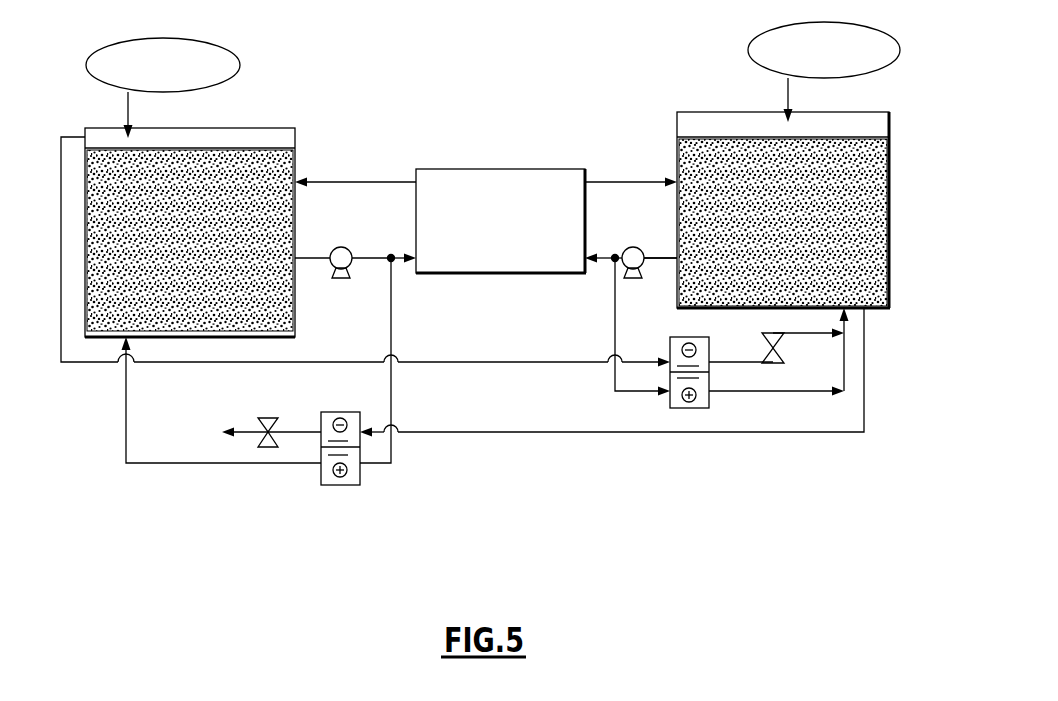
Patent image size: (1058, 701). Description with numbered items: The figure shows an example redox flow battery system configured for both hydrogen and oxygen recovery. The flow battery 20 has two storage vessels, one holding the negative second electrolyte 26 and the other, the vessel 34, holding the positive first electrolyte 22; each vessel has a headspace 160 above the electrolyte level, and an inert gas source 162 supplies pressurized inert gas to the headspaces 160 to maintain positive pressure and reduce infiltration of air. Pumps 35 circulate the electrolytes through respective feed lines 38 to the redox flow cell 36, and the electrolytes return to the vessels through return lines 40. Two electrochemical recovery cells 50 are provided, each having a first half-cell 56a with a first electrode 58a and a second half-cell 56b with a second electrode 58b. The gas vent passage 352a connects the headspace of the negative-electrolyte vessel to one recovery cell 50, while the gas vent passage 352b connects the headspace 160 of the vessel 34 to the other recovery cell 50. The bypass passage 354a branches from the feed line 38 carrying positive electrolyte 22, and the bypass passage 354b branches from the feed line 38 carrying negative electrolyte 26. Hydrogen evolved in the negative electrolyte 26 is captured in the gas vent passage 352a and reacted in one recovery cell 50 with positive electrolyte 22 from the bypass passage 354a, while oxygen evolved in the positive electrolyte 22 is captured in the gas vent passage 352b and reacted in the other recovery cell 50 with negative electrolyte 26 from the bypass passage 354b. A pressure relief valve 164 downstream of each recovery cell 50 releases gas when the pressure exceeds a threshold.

The flow battery 20 is at (446, 301).
The first electrolyte 22 is at (872, 272).
The second electrolyte 26 is at (211, 320).
The second vessel 34 is at (891, 196).
The pump 35 is at (627, 250).
The redox flow cell 36 is at (512, 283).
The feed line 38 is at (376, 254).
The return line 40 is at (345, 181).
The electrochemical recovery cell 50 is at (340, 487).
The first half-cell 56a is at (340, 417).
The second half-cell 56b is at (333, 472).
The first electrode 58a is at (347, 440).
The second electrode 58b is at (348, 456).
The headspace 160 is at (251, 136).
The inert gas source 162 is at (116, 43).
The pressure relief valve 164 is at (258, 420).
The gas vent passage 352a is at (59, 342).
The gas vent passage 352b is at (641, 433).
The bypass passage 354a is at (611, 336).
The bypass passage 354b is at (384, 336).